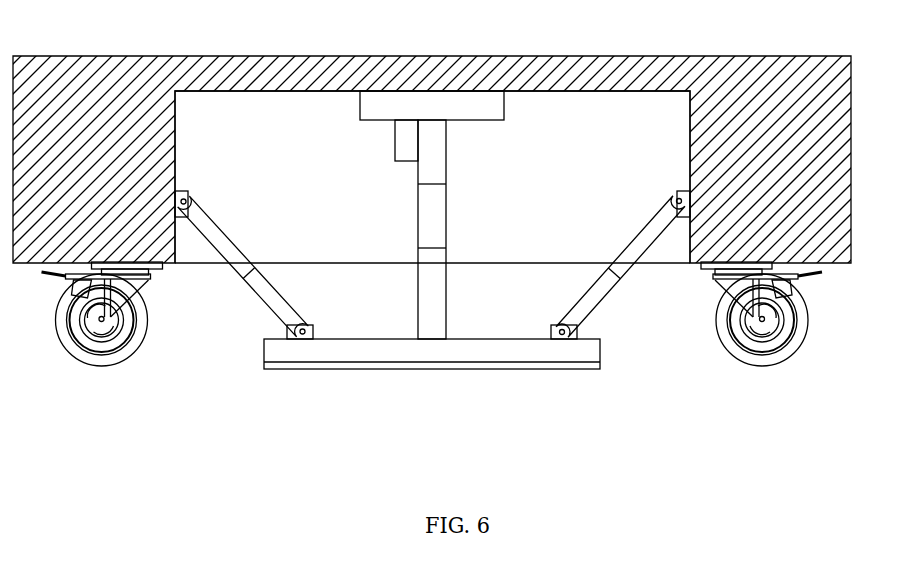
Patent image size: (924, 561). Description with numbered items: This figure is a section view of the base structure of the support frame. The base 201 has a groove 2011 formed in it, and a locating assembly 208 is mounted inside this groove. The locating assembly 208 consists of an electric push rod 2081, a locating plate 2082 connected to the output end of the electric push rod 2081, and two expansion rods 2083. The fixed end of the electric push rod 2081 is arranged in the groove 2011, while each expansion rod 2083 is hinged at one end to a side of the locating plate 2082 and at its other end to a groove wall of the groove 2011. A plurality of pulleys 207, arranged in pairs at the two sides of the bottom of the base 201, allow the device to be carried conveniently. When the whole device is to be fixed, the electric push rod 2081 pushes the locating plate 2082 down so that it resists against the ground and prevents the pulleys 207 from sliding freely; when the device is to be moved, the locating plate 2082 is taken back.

The base 201 is at (822, 72).
The groove 2011 is at (495, 250).
The pulleys 207 is at (785, 335).
The locating assembly 208 is at (432, 249).
The electric push rod 2081 is at (468, 110).
The locating plate 2082 is at (470, 355).
The expansion rods 2083 is at (600, 290).